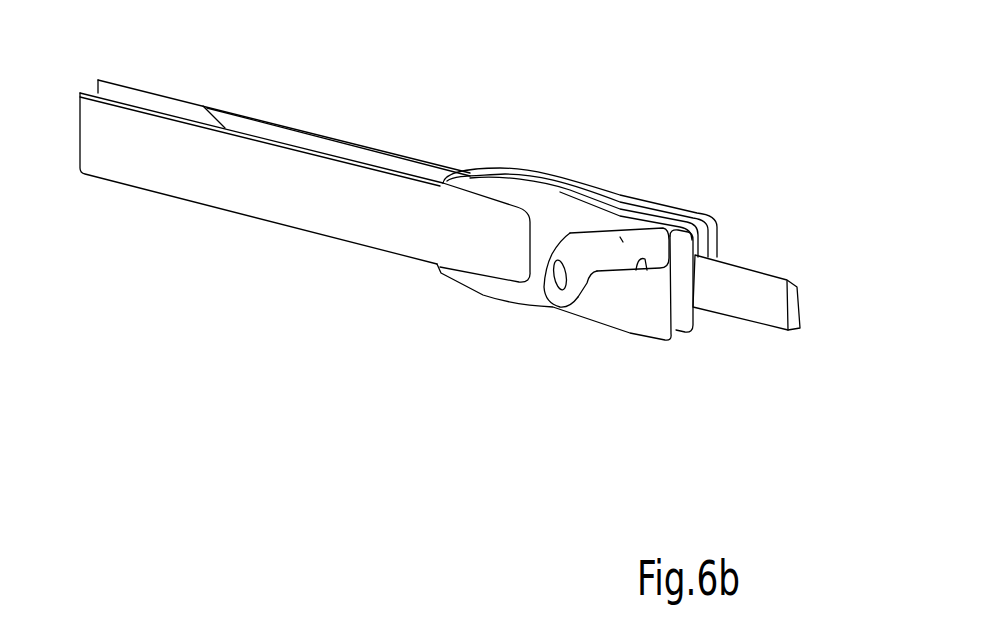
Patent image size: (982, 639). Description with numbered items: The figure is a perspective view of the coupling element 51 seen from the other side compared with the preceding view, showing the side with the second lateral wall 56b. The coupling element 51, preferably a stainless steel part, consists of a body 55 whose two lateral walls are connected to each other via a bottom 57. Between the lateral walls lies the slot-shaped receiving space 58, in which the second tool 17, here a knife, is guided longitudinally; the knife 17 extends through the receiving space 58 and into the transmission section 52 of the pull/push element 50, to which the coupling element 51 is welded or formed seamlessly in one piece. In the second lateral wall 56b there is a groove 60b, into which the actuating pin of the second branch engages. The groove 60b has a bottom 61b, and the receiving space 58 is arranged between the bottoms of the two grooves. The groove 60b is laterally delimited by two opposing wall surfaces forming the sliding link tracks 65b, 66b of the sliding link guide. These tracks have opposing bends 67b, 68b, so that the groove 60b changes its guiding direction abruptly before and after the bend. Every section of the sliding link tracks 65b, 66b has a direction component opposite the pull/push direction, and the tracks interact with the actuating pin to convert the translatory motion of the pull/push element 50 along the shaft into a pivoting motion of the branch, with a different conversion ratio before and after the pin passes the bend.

The pull/push element 50 is at (268, 270).
The transmission section 52 is at (349, 102).
The bend 68b is at (575, 228).
The receiving space 58 is at (596, 185).
The body 55 is at (622, 193).
The coupling element 51 is at (643, 184).
The second lateral wall 56b is at (556, 205).
The groove 60b is at (645, 197).
The bottom 57 is at (162, 0).
The second tool 17 is at (748, 263).
The sliding link track 65b is at (622, 277).
The bottom of groove 61b is at (606, 290).
The sliding link track 66b is at (545, 290).
The bend 67b is at (578, 282).